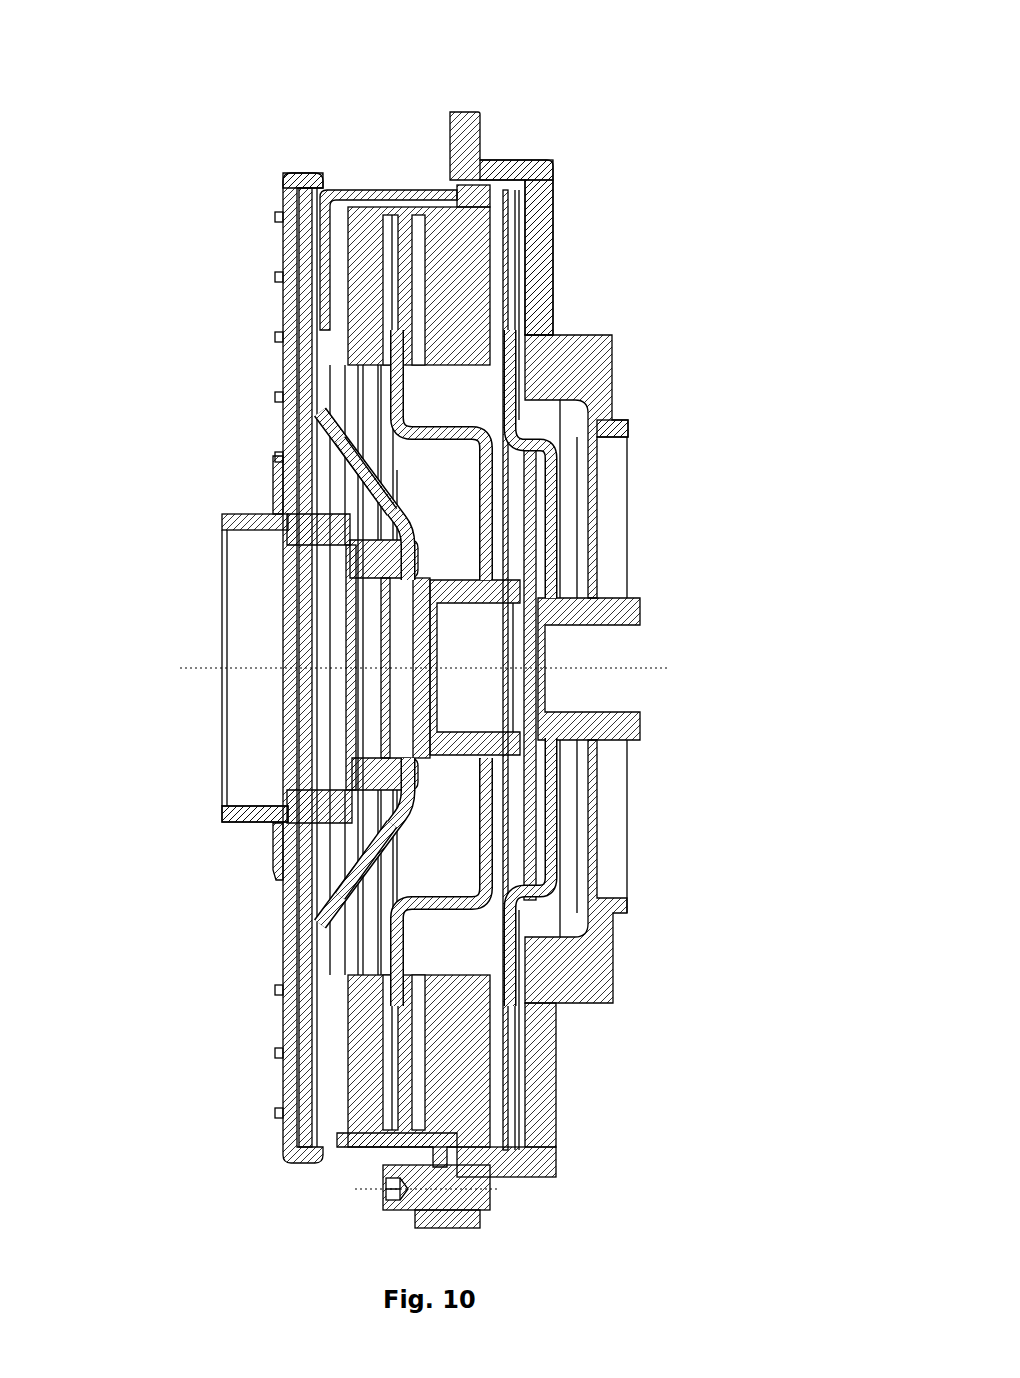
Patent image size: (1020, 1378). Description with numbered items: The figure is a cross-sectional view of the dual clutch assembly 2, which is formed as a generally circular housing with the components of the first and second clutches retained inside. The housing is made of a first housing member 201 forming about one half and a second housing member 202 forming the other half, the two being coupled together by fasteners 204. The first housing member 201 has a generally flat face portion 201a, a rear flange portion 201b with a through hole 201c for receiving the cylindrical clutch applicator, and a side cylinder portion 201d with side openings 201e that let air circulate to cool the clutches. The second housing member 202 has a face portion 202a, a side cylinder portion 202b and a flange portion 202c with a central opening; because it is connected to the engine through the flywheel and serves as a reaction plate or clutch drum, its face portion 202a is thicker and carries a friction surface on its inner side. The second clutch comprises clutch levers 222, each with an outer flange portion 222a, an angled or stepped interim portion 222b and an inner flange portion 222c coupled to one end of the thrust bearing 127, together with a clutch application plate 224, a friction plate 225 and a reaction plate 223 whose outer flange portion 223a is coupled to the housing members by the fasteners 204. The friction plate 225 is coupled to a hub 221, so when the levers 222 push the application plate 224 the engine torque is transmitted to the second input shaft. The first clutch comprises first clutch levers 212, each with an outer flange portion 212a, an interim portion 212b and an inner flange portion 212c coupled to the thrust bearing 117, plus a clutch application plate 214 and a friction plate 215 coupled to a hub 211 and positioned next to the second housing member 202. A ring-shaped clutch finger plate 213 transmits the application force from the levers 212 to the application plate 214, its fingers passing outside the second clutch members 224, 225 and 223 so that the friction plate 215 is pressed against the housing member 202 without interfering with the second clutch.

The dual clutch assembly 2 is at (528, 122).
The first housing member 201 is at (292, 333).
The face portion 201a is at (280, 862).
The rear flange portion 201b is at (262, 822).
The through hole 201c is at (255, 578).
The side cylinder portion 201d is at (307, 180).
The side openings 201e is at (389, 176).
The second housing member 202 is at (598, 985).
The face portion 202a is at (545, 232).
The side cylinder portion 202b is at (512, 170).
The flange portion 202c is at (600, 428).
The fasteners 204 is at (397, 1210).
The hub 211 is at (577, 612).
The first clutch levers 212 is at (368, 438).
The outer flange portion 212a is at (340, 380).
The interim portion 212b is at (338, 470).
The inner flange portion 212c is at (300, 510).
The clutch finger plate 213 is at (318, 208).
The clutch application plate 214 is at (477, 1085).
The friction plate 215 is at (518, 1042).
The hub 221 is at (553, 780).
The clutch levers 222 is at (332, 978).
The outer flange portion 222a is at (318, 1108).
The interim portion 222b is at (330, 1010).
The inner flange portion 222c is at (410, 762).
The reaction plate 223 is at (447, 285).
The outer flange portion 223a is at (442, 1160).
The clutch application plate 224 is at (365, 318).
The friction plate 225 is at (406, 295).
The thrust bearing 117 is at (252, 528).
The thrust bearing 127 is at (408, 776).